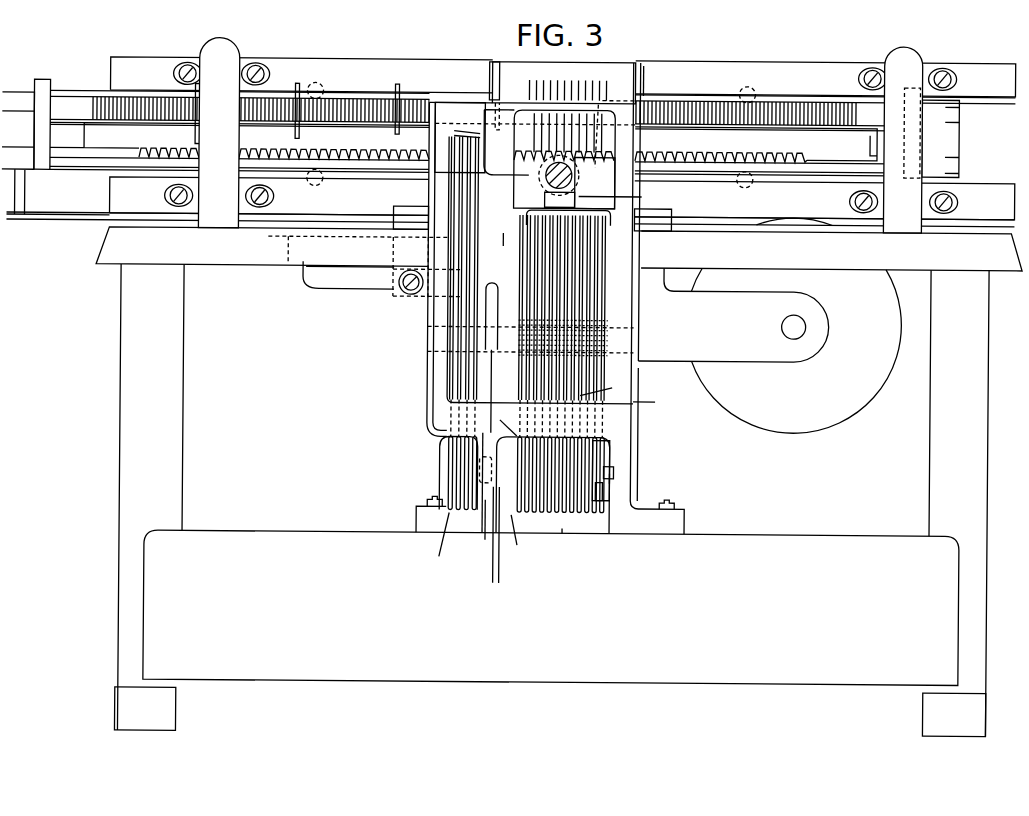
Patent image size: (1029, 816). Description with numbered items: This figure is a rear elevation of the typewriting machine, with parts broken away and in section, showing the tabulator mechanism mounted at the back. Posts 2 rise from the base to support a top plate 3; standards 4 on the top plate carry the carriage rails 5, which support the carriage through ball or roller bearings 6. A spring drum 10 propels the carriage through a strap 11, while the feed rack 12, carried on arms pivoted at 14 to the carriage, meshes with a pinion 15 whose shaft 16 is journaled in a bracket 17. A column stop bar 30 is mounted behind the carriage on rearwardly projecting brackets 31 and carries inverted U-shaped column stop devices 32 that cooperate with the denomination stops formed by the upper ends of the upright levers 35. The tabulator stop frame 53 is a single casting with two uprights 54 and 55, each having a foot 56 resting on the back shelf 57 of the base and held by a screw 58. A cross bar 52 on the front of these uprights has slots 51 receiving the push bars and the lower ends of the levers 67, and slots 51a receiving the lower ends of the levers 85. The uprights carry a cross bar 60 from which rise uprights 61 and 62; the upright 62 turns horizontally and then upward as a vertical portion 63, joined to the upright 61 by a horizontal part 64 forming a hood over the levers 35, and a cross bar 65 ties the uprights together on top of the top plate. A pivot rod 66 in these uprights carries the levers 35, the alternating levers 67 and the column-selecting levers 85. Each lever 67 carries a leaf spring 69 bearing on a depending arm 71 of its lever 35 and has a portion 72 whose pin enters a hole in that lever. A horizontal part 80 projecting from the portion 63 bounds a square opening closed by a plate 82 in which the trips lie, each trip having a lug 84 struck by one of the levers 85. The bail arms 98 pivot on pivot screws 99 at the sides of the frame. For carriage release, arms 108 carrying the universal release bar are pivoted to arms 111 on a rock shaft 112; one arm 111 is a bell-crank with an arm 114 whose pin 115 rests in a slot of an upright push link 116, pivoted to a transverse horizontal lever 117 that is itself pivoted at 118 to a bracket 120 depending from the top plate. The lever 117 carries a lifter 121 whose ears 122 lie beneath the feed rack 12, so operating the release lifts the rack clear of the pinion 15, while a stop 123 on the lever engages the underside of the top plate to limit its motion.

The posts 2 is at (177, 447).
The top plate 3 is at (218, 258).
The standards 4 is at (217, 43).
The carriage rails 5 is at (800, 63).
The ball or roller bearings 6 is at (318, 86).
The spring drum 10 is at (800, 432).
The strap 11 is at (40, 222).
The feed rack 12 is at (480, 141).
The pivot 14 is at (70, 143).
The pinion 15 is at (572, 178).
The shaft 16 is at (545, 193).
The bracket 17 is at (613, 212).
The column stop bar 30 is at (806, 106).
The brackets 31 is at (38, 83).
The column stop devices 32 is at (192, 100).
The upright levers 35 is at (600, 298).
The slot 51 is at (522, 515).
The slot 51a is at (458, 513).
The cross bar 52 is at (563, 533).
The tabulator stop frame 53 is at (632, 433).
The upright 54 is at (630, 469).
The upright 55 is at (483, 533).
The foot 56 is at (420, 520).
The back shelf 57 is at (276, 532).
The screw 58 is at (428, 500).
The cross bar 60 is at (558, 469).
The upright 61 is at (630, 257).
The upright 62 is at (432, 318).
The vertical portion 63 is at (506, 142).
The horizontal part 64 is at (563, 83).
The cross bar 65 is at (400, 212).
The pivot rod 66 is at (437, 352).
The levers 67 is at (580, 400).
The leaf spring 69 is at (522, 434).
The depending arm 71 is at (655, 407).
The arm or portion 72 is at (520, 327).
The horizontal part 80 is at (459, 106).
The plate 82 is at (440, 100).
The lug 84 is at (456, 136).
The upright levers 85 is at (475, 247).
The arms 98 is at (489, 62).
The pivot screws 99 is at (692, 79).
The arms 108 is at (447, 452).
The arms 111 is at (500, 540).
The rock shaft 112 is at (598, 502).
The arm 114 is at (480, 463).
The pin 115 is at (486, 540).
The upright push link 116 is at (490, 380).
The transverse horizontal lever 117 is at (509, 250).
The pivot 118 is at (397, 289).
The bracket 120 is at (393, 247).
The lifter 121 is at (628, 198).
The ears 122 is at (640, 146).
The stop 123 is at (287, 247).